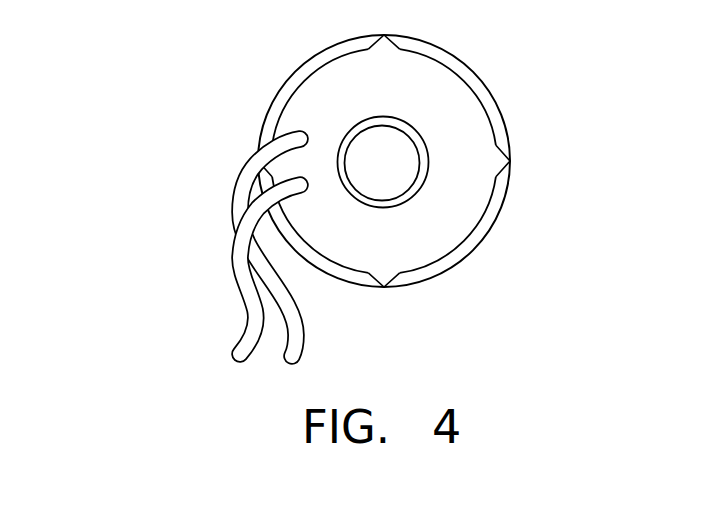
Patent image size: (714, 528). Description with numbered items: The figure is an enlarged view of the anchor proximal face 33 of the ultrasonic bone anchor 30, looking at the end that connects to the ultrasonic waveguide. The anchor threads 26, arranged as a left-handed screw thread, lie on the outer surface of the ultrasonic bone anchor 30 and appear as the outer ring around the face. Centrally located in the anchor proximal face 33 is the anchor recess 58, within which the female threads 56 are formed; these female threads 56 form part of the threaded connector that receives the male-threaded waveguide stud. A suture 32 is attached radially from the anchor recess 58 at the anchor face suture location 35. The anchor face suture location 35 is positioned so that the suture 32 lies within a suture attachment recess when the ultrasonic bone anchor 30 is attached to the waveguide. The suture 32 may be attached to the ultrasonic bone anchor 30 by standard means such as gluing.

The ultrasonic bone anchor 30 is at (184, 106).
The anchor threads 26 is at (505, 120).
The anchor proximal face 33 is at (430, 83).
The anchor face suture location 35 is at (302, 137).
The female threads 56 is at (365, 120).
The anchor recess 58 is at (399, 173).
The suture 32 is at (283, 209).